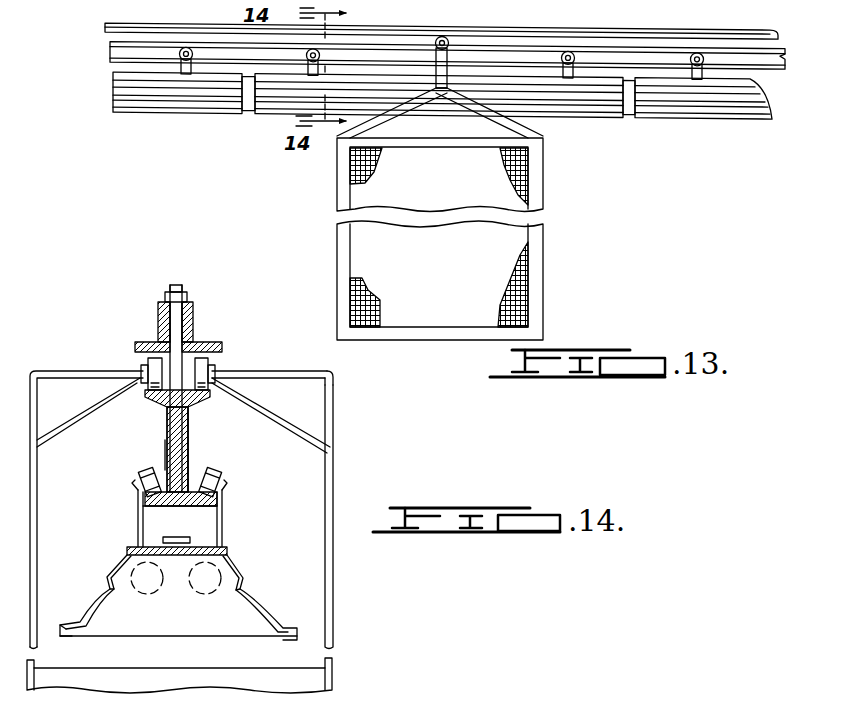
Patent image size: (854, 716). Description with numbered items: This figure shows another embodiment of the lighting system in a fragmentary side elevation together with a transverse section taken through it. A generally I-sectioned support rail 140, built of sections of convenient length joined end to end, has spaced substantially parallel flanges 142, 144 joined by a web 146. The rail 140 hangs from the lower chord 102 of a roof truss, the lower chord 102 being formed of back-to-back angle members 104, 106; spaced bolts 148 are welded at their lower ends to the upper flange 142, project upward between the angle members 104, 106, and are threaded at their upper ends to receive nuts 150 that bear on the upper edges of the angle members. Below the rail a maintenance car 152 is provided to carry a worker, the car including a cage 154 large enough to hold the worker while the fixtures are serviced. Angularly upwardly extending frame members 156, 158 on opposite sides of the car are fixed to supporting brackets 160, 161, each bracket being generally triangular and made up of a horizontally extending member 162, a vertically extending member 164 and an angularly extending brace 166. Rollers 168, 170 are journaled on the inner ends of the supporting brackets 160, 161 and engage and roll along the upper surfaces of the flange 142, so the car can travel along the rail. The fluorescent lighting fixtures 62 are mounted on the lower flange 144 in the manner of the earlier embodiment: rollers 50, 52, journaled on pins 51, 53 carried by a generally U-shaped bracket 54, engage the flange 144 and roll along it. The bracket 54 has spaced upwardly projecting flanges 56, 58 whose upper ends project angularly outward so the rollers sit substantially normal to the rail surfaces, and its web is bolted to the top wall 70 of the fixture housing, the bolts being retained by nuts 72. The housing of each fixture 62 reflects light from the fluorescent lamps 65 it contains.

In FIG. 13, the lower chord 102 is at (191, 9).
In FIG. 13, the support rail 140 is at (106, 57).
In FIG. 14, the support rail 140 is at (190, 440).
In FIG. 13, the nuts 150 is at (430, 38).
In FIG. 14, the nuts 150 is at (190, 296).
In FIG. 13, the bolts 148 is at (447, 40).
In FIG. 14, the bolts 148 is at (178, 328).
In FIG. 13, the frame member 156 is at (378, 126).
In FIG. 13, the frame member 158 is at (540, 132).
In FIG. 13, the maintenance car 152 is at (536, 281).
In FIG. 14, the maintenance car 152 is at (332, 671).
In FIG. 13, the cage 154 is at (516, 246).
In FIG. 14, the angle member 104 is at (158, 307).
In FIG. 14, the angle member 106 is at (190, 318).
In FIG. 14, the roller 168 is at (143, 356).
In FIG. 14, the supporting bracket 160 is at (74, 368).
In FIG. 14, the supporting bracket 161 is at (258, 370).
In FIG. 14, the horizontally extending member 162 is at (312, 375).
In FIG. 14, the vertically extending member 164 is at (330, 416).
In FIG. 14, the angularly extending brace 166 is at (266, 415).
In FIG. 14, the roller 170 is at (215, 364).
In FIG. 14, the flange 142 is at (145, 406).
In FIG. 14, the web 146 is at (190, 420).
In FIG. 14, the flange 144 is at (162, 464).
In FIG. 14, the roller 50 is at (142, 470).
In FIG. 14, the pin 51 is at (130, 478).
In FIG. 14, the roller 52 is at (218, 464).
In FIG. 14, the pin 53 is at (222, 478).
In FIG. 14, the flange 56 is at (221, 500).
In FIG. 14, the bracket 54 is at (228, 514).
In FIG. 14, the flange 58 is at (135, 512).
In FIG. 14, the nuts 72 is at (181, 538).
In FIG. 14, the top wall 70 is at (224, 548).
In FIG. 14, the fluorescent lighting fixture 62 is at (238, 569).
In FIG. 14, the fluorescent lamps 65 is at (200, 592).